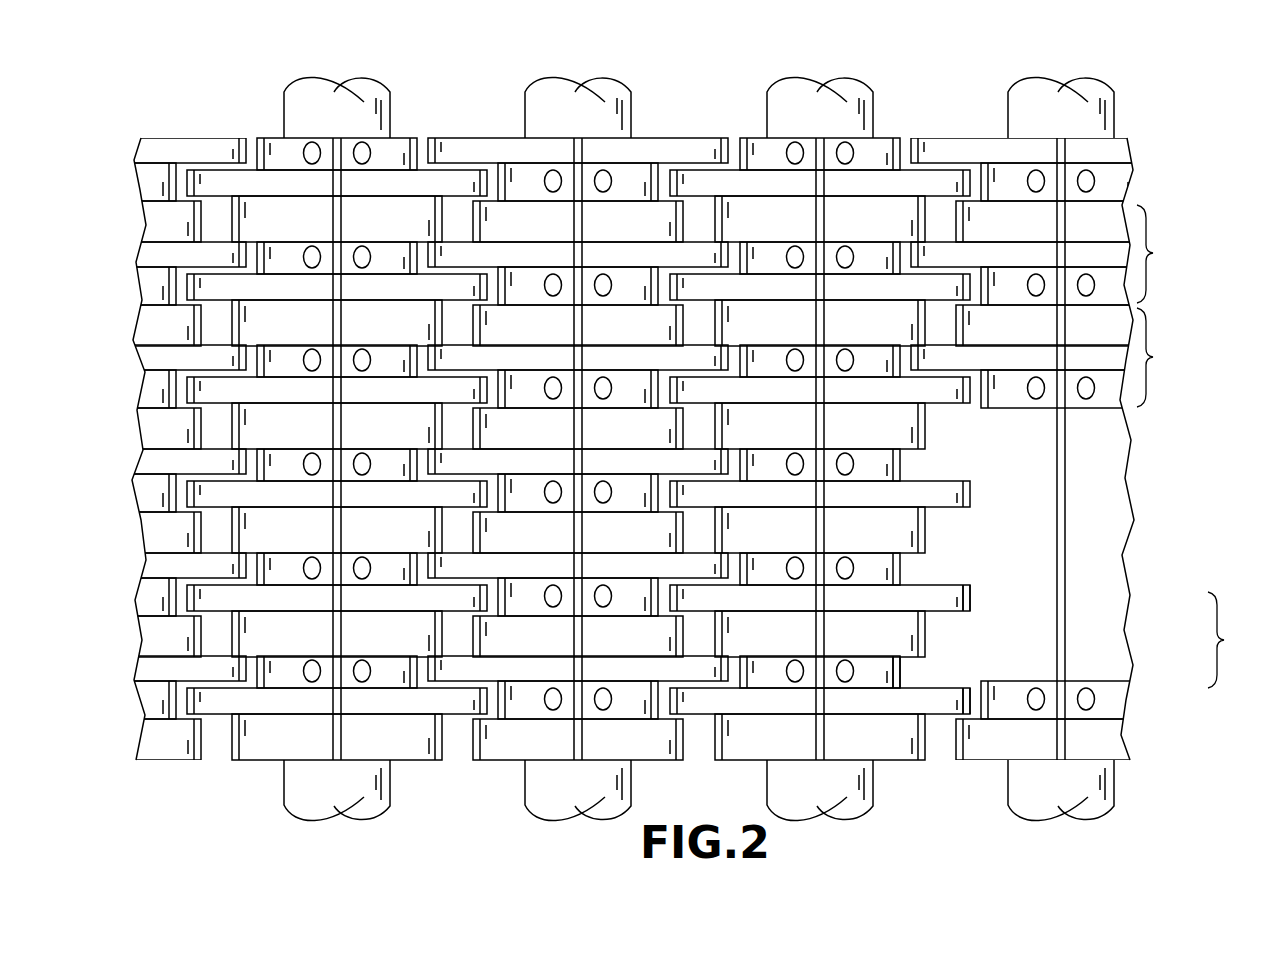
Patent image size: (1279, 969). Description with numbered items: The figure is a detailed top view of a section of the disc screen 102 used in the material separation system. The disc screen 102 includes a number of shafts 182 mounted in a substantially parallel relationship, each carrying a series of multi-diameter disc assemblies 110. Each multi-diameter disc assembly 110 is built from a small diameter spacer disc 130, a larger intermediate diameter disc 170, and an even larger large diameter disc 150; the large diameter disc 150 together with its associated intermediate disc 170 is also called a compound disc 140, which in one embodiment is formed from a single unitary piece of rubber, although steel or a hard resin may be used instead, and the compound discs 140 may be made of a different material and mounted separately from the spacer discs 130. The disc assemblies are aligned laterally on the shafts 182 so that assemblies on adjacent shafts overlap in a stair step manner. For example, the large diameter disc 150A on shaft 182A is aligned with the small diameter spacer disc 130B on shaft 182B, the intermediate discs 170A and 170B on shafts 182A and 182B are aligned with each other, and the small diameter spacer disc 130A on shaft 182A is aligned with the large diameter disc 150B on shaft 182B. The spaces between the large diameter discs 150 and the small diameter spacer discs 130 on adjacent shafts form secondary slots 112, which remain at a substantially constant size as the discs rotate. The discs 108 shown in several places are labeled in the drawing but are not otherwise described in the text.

The disc screen 102 is at (1162, 139).
The bar 108 is at (458, 214).
The multi-diameter disc assembly 110 is at (1202, 446).
The secondary slot 112 is at (977, 596).
The small diameter spacer disc 130 is at (1110, 498).
The small diameter spacer disc 130A is at (1112, 602).
The small diameter spacer disc 130B is at (870, 684).
The compound disc 140 is at (1120, 468).
The large diameter disc 150 is at (1110, 572).
The large diameter disc 150A is at (1112, 676).
The large diameter disc 150B is at (873, 598).
The intermediate diameter disc 170 is at (1110, 537).
The intermediate disc 170A is at (1112, 640).
The intermediate disc 170B is at (713, 636).
The shaft 182 is at (284, 116).
The shaft 182A is at (1008, 784).
The shaft 182B is at (767, 784).